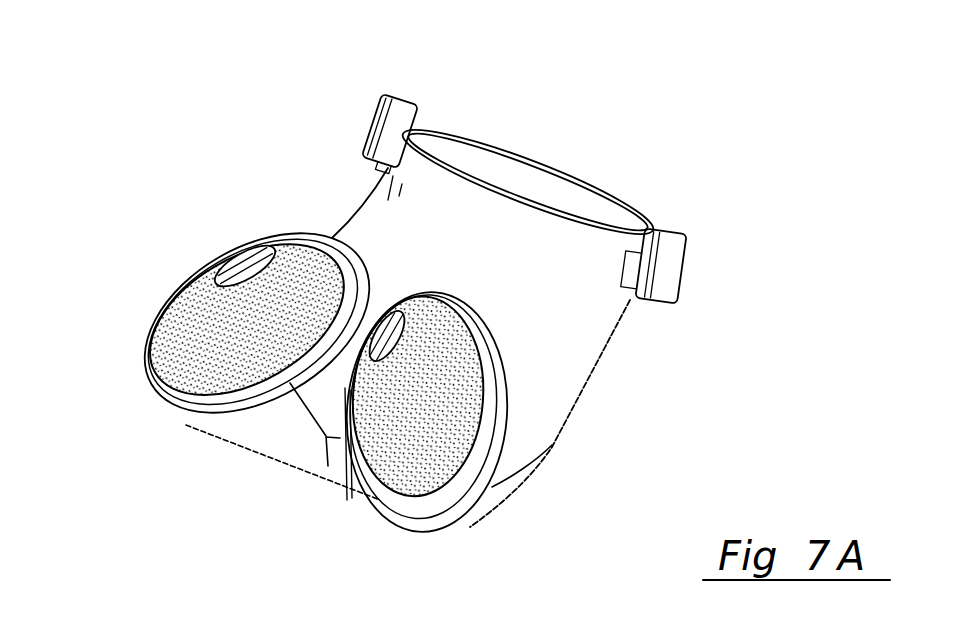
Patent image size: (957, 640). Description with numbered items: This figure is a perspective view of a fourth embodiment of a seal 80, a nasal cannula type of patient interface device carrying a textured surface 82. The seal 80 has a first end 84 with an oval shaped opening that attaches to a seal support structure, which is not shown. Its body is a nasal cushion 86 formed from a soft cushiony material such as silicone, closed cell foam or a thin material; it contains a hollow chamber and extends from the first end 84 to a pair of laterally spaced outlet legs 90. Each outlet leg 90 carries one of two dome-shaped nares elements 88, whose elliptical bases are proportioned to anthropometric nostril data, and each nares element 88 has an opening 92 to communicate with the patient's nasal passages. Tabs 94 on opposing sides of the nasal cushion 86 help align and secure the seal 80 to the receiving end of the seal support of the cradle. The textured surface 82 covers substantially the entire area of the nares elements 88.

The seal 80 is at (580, 358).
The textured surface 82 is at (186, 274).
The first end 84 is at (546, 163).
The nasal cushion 86 is at (543, 423).
The nares element 88 is at (300, 255).
The outlet leg 90 is at (186, 425).
The opening 92 is at (238, 250).
The tab 94 is at (404, 98).